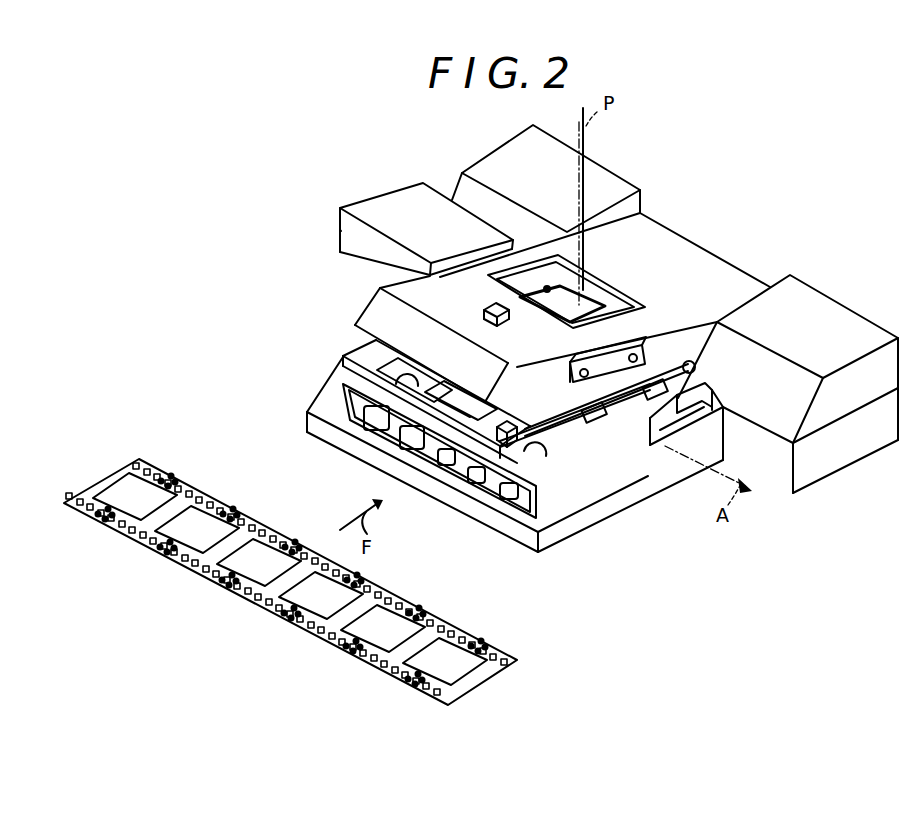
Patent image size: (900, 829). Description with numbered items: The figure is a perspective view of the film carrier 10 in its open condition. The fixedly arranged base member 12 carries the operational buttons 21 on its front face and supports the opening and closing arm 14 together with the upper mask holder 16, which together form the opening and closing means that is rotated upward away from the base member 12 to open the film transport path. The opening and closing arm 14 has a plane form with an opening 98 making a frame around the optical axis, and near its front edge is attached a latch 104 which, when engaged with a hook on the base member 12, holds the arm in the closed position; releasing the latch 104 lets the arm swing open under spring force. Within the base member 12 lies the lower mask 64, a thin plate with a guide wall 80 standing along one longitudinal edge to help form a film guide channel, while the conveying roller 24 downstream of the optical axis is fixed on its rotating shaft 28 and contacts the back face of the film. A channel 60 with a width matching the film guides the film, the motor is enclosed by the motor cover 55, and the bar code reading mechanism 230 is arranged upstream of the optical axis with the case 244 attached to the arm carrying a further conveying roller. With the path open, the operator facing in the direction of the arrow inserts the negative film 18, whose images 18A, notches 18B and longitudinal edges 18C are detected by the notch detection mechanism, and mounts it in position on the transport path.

The film carrier 10 is at (750, 158).
The base member 12 is at (560, 534).
The opening and closing arm 14 is at (695, 252).
The upper mask holder 16 is at (600, 292).
The negative film 18 is at (318, 584).
The image 18A is at (462, 680).
The notch 18B is at (168, 477).
The longitudinal edges 18C is at (108, 480).
The operational buttons 21 is at (447, 465).
The conveying roller 24 is at (632, 410).
The rotating shaft 28 is at (560, 424).
The motor cover 55 is at (816, 308).
The channel 60 is at (650, 438).
The lower mask 64 is at (585, 383).
The guide wall 80 is at (510, 417).
The opening 98 is at (549, 312).
The latch 104 is at (486, 309).
The bar code reading mechanism 230 is at (369, 196).
The case 244 is at (358, 256).